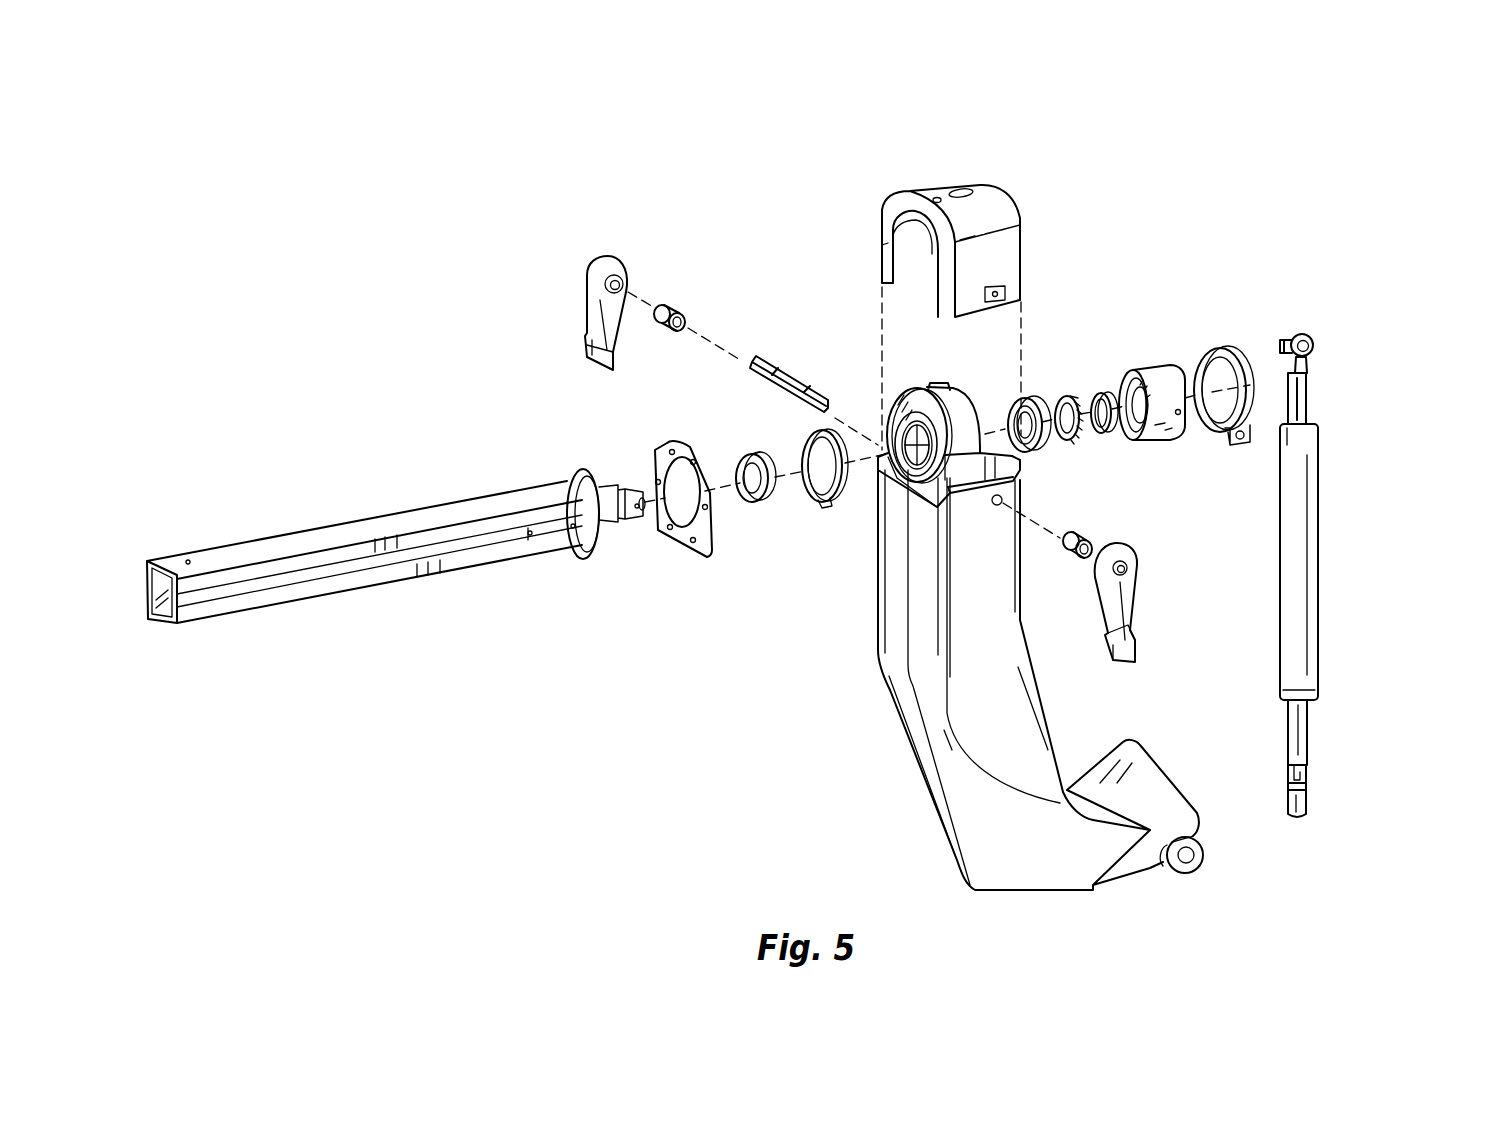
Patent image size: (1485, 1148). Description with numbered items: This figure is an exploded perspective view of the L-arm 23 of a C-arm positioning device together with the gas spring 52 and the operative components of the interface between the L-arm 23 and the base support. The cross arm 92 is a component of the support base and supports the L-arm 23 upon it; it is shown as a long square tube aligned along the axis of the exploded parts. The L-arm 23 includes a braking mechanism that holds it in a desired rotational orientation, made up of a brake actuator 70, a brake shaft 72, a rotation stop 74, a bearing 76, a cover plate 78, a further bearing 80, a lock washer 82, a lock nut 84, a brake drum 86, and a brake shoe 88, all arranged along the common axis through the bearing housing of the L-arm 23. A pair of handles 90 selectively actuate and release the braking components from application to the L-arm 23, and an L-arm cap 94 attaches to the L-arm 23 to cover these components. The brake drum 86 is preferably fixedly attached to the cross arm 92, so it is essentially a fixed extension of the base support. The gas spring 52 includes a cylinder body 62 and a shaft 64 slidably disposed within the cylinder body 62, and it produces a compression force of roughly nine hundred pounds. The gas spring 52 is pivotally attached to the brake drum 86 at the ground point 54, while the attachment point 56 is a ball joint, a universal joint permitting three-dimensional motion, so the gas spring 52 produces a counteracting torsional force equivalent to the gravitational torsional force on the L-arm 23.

The L-arm 23 is at (900, 703).
The gas spring 52 is at (1367, 555).
The ground point 54 is at (1313, 338).
The attachment point 56 is at (1306, 785).
The cylinder body 62 is at (1300, 525).
The shaft 64 is at (1300, 730).
The brake actuator 70 is at (672, 302).
The brake shaft 72 is at (790, 362).
The rotation stop 74 is at (806, 485).
The bearing 76 is at (752, 505).
The cover plate 78 is at (660, 545).
The bearing 80 is at (1028, 398).
The lock washer 82 is at (1060, 395).
The lock nut 84 is at (1100, 392).
The brake drum 86 is at (1148, 368).
The brake shoe 88 is at (1220, 346).
The handles 90 is at (583, 305).
The cross arm 92 is at (330, 530).
The L-arm cap 94 is at (942, 186).